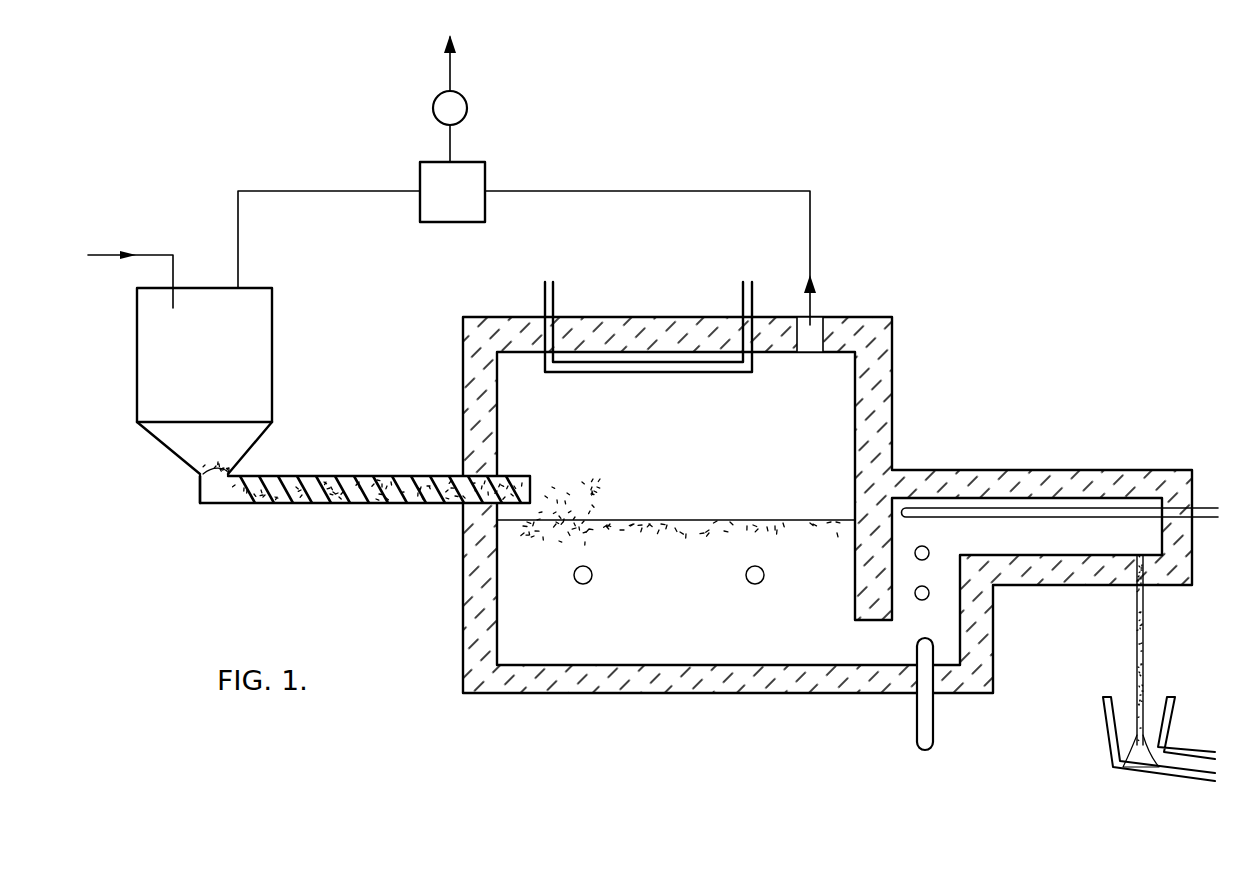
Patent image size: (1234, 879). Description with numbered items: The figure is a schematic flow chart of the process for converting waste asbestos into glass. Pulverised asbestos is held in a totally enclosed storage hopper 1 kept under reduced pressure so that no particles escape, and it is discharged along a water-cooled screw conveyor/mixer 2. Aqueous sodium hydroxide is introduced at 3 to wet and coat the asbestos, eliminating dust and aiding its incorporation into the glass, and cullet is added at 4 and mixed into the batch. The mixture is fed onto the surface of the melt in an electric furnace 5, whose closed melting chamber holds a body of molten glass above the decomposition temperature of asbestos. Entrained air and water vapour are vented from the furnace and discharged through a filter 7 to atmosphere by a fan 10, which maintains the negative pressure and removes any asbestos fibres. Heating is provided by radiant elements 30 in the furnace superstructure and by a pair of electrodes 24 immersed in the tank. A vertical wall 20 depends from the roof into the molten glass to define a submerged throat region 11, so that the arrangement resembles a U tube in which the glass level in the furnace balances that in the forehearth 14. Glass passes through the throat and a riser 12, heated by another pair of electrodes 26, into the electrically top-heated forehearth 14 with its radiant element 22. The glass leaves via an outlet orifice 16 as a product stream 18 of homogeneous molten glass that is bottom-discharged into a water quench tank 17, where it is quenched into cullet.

The storage hopper 1 is at (195, 383).
The screw conveyor/mixer 2 is at (345, 474).
The sodium hydroxide introduction point 3 is at (302, 465).
The cullet addition point 4 is at (391, 465).
The electric furnace 5 is at (678, 306).
The filter 7 is at (441, 207).
The fan 10 is at (467, 106).
The throat region 11 is at (870, 645).
The riser 12 is at (925, 617).
The forehearth 14 is at (1045, 538).
The outlet orifice 16 is at (1157, 598).
The product stream 18 is at (1143, 665).
The water quench tank 17 is at (1165, 728).
The vertical wall 20 is at (855, 588).
The radiant element 22 is at (980, 510).
The pair of electrodes 24 is at (933, 720).
The pair of electrodes 26 is at (929, 556).
The radiant element 30 is at (607, 360).